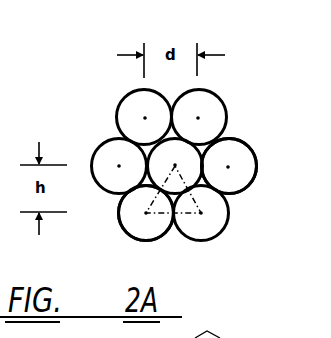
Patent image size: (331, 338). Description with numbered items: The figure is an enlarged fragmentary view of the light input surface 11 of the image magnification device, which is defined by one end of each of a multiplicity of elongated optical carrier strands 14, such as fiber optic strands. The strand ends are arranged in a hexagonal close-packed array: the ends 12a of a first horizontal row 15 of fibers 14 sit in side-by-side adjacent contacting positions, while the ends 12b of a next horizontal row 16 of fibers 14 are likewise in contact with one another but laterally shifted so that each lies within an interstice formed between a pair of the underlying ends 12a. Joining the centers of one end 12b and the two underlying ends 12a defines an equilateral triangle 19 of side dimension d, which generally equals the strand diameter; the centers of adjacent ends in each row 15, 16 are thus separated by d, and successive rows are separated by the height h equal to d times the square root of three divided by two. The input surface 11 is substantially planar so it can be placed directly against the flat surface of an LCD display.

The light input surface 11 is at (107, 104).
The ends of first horizontal row of fibers 12a is at (152, 230).
The ends of next horizontal row of fibers 12b is at (185, 152).
The optical carrier strands 14 is at (248, 145).
The first horizontal row 15 is at (131, 237).
The next horizontal row 16 is at (96, 150).
The equilateral triangle 19 is at (143, 198).